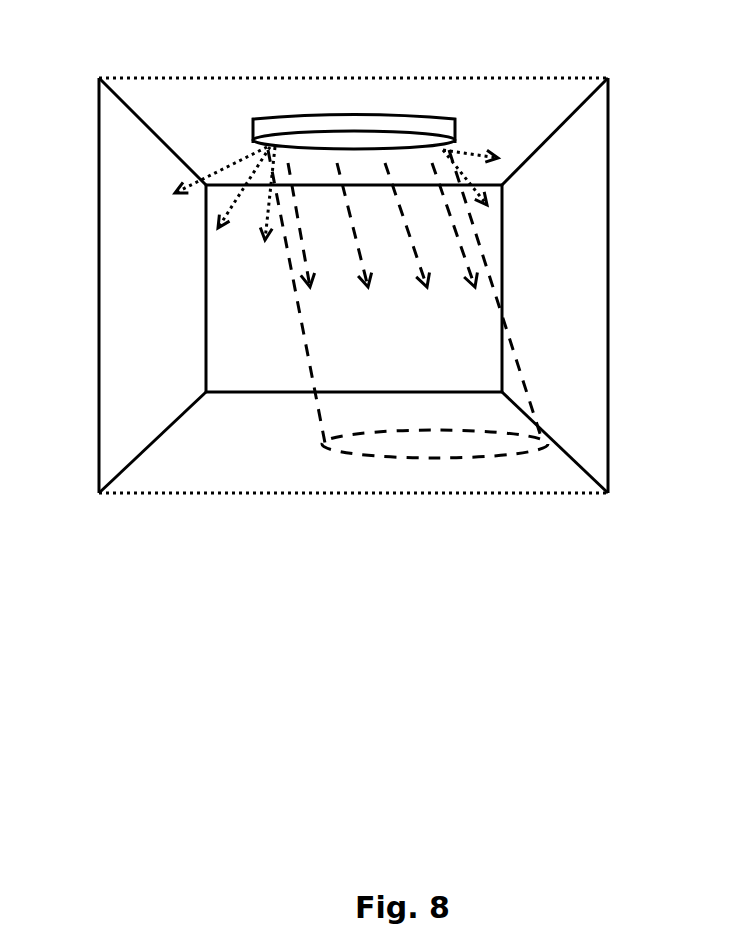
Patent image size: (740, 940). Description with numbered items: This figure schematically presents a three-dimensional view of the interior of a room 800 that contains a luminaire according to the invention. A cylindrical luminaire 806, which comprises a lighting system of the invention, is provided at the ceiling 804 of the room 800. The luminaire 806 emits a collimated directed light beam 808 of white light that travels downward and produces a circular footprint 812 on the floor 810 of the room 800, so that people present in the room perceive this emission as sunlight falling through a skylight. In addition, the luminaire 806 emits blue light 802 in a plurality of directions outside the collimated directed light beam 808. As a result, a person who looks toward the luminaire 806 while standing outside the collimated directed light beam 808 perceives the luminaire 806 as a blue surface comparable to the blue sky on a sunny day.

The room 800 is at (171, 458).
The blue light 802 is at (170, 186).
The ceiling 804 is at (208, 127).
The cylindrical luminaire 806 is at (388, 127).
The collimated directed light beam 808 is at (430, 222).
The floor 810 is at (262, 445).
The circular footprint 812 is at (443, 445).